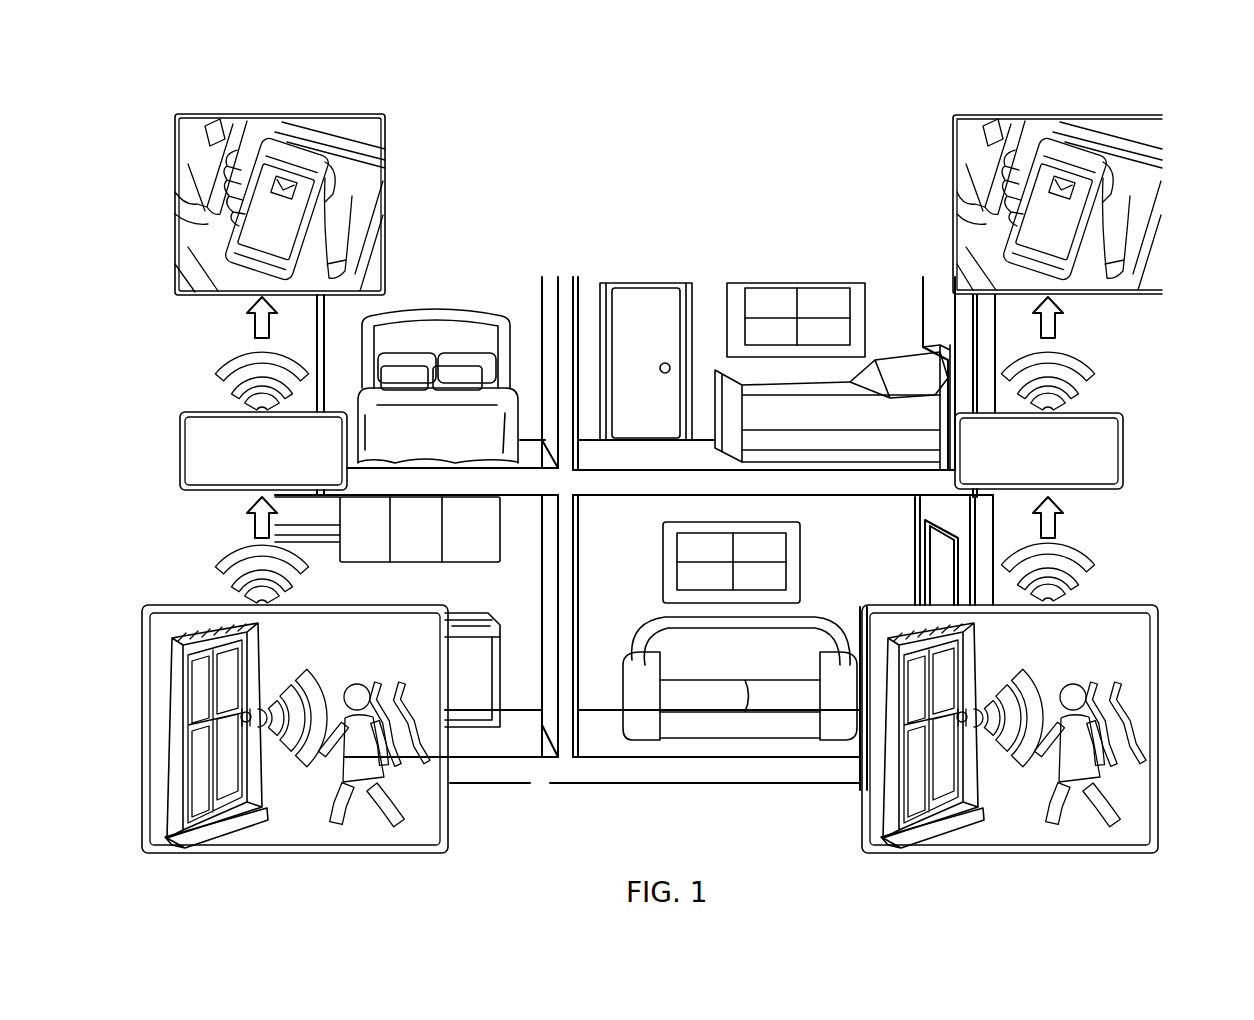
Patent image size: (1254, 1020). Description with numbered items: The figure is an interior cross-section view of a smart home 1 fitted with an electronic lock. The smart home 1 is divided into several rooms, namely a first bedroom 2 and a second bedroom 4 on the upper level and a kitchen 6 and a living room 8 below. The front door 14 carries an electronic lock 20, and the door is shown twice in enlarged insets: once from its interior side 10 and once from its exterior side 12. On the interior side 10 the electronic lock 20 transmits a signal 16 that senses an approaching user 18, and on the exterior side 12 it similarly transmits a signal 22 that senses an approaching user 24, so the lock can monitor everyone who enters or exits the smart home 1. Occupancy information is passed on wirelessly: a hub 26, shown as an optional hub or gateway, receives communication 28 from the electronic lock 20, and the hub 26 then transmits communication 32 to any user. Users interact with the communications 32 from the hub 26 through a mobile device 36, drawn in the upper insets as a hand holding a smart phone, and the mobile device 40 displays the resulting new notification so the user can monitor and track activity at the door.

The smart home 1 is at (599, 95).
The first bedroom 2 is at (469, 242).
The second bedroom 4 is at (733, 231).
The kitchen 6 is at (510, 792).
The living room 8 is at (673, 800).
The interior side 10 is at (134, 609).
The exterior side 12 is at (1182, 628).
The front door 14 is at (250, 643).
The signal 16 is at (303, 680).
The user 18 is at (335, 817).
The electronic lock 20 is at (245, 722).
The signal 22 is at (1022, 678).
The user 24 is at (1050, 823).
The hub 26 is at (180, 448).
The communication 28 is at (228, 561).
The communication 32 is at (236, 362).
The mobile device 36 is at (317, 109).
The mobile device 40 is at (313, 156).